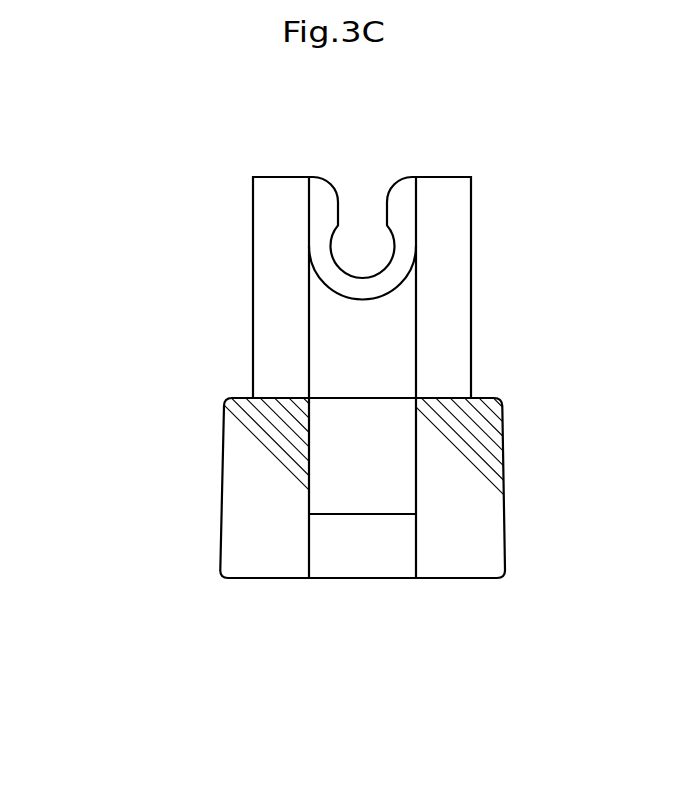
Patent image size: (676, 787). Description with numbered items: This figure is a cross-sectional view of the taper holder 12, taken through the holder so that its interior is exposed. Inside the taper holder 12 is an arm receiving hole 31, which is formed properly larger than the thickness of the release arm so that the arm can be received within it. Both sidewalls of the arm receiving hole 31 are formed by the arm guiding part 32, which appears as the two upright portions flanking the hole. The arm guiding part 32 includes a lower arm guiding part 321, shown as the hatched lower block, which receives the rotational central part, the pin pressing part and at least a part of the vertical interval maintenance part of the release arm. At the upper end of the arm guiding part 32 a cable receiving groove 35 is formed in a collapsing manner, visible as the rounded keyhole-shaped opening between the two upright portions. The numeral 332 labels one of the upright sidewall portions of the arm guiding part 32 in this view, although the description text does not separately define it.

The taper holder 12 is at (516, 154).
The arm receiving hole 31 is at (360, 550).
The arm guiding part 32 is at (60, 358).
The lower arm guiding part 321 is at (260, 444).
The upright arm 332 is at (278, 323).
The cable receiving groove 35 is at (362, 253).